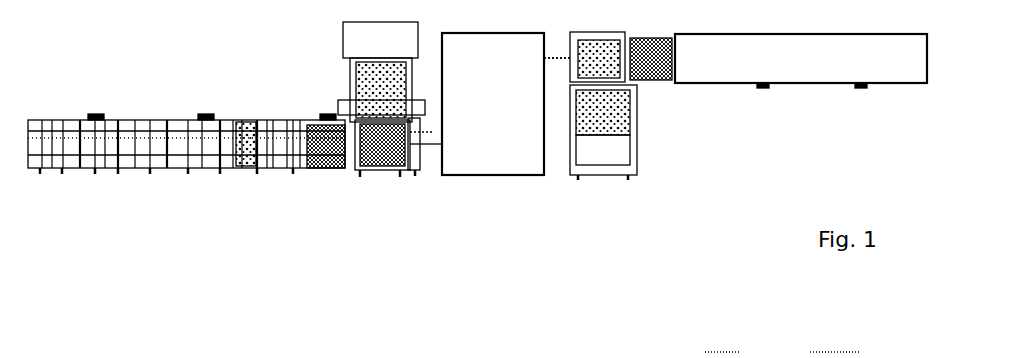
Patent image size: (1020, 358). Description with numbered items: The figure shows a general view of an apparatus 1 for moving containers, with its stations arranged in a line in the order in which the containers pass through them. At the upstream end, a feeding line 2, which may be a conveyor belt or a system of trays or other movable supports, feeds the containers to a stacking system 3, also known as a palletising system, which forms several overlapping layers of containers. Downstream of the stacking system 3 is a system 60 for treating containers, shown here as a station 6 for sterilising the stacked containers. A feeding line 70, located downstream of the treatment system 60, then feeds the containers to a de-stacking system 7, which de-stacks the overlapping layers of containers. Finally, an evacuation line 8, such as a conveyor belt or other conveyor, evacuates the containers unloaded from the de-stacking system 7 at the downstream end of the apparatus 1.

The apparatus for moving containers 1 is at (424, 253).
The feeding line 2 is at (152, 183).
The stacking system 3 is at (369, 186).
The station for sterilising containers 6 is at (504, 181).
The system for treating containers 60 is at (493, 104).
The de-stacking system 7 is at (648, 119).
The feeding line 70 is at (557, 64).
The evacuation line 8 is at (765, 101).